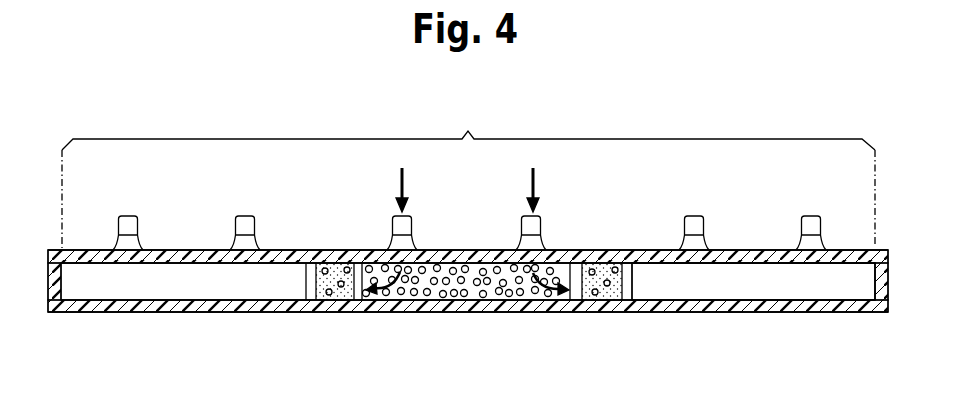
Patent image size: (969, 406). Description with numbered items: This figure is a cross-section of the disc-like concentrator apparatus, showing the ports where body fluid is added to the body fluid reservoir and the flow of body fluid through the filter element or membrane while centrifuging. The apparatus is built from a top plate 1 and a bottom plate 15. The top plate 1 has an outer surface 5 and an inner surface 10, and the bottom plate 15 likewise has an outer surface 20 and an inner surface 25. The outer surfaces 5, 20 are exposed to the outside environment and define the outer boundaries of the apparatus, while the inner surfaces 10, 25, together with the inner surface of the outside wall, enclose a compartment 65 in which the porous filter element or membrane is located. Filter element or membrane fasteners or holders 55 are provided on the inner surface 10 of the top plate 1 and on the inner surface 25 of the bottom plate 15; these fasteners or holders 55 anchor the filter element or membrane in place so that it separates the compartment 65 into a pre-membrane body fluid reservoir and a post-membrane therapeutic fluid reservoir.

The top plate 1 is at (483, 260).
The outer surface of the top plate 5 is at (857, 238).
The inner surface of the top plate 10 is at (836, 239).
The bottom plate 15 is at (488, 306).
The outer surface of the bottom plate 20 is at (869, 323).
The inner surface of the bottom plate 25 is at (761, 289).
The filter element or membrane fastener or holder 55 is at (305, 298).
The compartment 65 is at (468, 177).